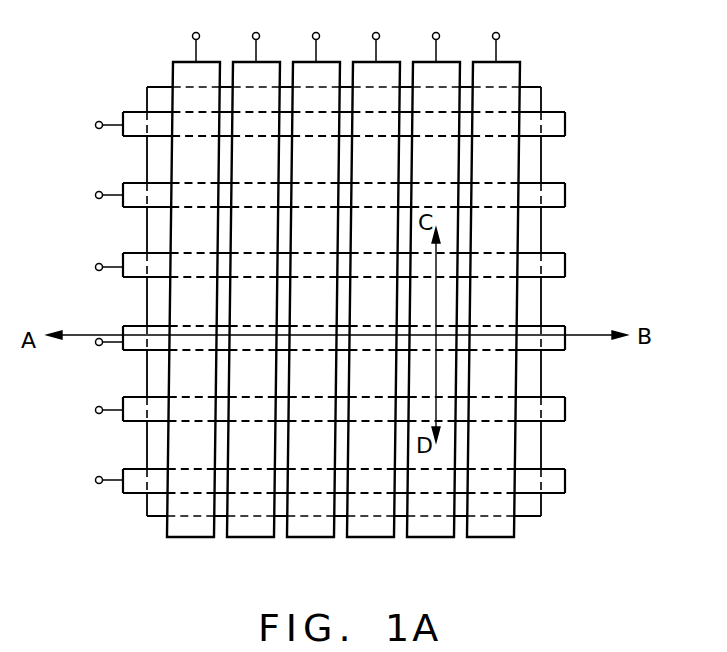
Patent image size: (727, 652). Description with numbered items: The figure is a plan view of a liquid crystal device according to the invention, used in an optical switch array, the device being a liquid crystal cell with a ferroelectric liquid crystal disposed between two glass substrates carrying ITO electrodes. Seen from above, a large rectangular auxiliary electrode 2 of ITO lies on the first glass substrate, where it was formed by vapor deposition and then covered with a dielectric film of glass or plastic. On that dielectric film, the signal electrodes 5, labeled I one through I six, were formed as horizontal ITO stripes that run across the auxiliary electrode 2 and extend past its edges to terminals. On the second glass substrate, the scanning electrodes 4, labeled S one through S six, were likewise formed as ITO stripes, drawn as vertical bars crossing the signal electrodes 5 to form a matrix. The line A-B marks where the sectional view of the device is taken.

The auxiliary electrode 2 is at (540, 440).
The scanning electrodes 4 is at (515, 38).
The signal electrodes 5 is at (112, 492).